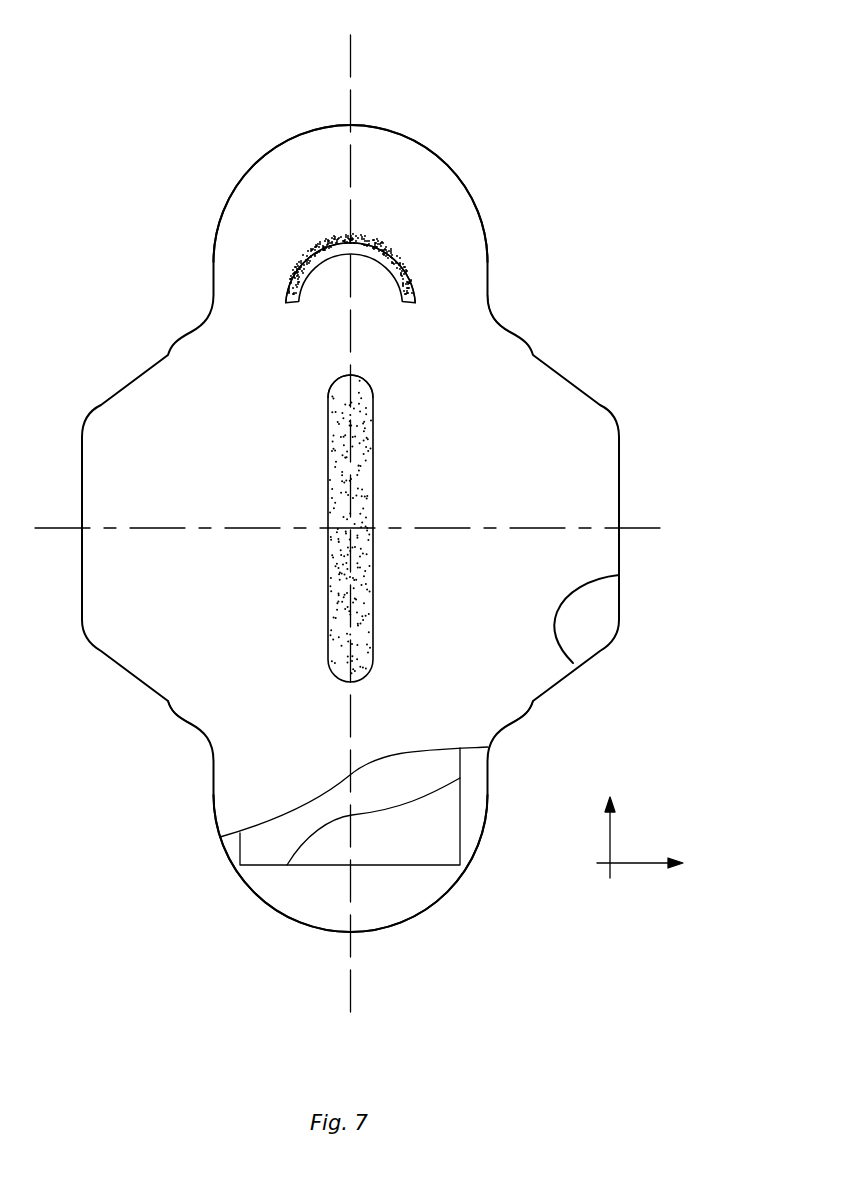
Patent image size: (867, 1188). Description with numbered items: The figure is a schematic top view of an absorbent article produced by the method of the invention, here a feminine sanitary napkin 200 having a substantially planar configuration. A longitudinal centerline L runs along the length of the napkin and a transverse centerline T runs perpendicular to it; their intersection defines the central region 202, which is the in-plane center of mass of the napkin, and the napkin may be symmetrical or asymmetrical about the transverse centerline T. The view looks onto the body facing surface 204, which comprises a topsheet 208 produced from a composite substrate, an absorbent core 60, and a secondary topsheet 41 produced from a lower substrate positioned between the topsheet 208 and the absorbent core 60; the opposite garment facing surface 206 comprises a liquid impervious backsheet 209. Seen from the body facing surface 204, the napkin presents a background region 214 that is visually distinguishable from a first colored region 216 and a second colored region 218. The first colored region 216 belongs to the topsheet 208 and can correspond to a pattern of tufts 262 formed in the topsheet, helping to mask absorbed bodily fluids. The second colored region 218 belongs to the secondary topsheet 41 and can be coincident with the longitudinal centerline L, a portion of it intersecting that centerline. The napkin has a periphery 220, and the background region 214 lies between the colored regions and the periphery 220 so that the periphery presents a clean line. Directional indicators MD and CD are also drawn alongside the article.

The feminine sanitary napkin 200 is at (482, 104).
The central region 202 is at (350, 528).
The body facing surface 204 is at (462, 368).
The garment facing surface 206 is at (620, 617).
The topsheet 208 is at (473, 725).
The liquid impervious backsheet 209 is at (380, 898).
The background region 214 is at (232, 672).
The first colored region 216 is at (413, 275).
The second colored region 218 is at (360, 582).
The periphery 220 is at (400, 133).
The tufts 262 is at (330, 240).
The secondary topsheet 41 is at (422, 793).
The absorbent core 60 is at (430, 848).
The longitudinal centerline L is at (351, 68).
The transverse centerline T is at (637, 527).
The machine direction MD is at (617, 821).
The cross direction CD is at (658, 864).